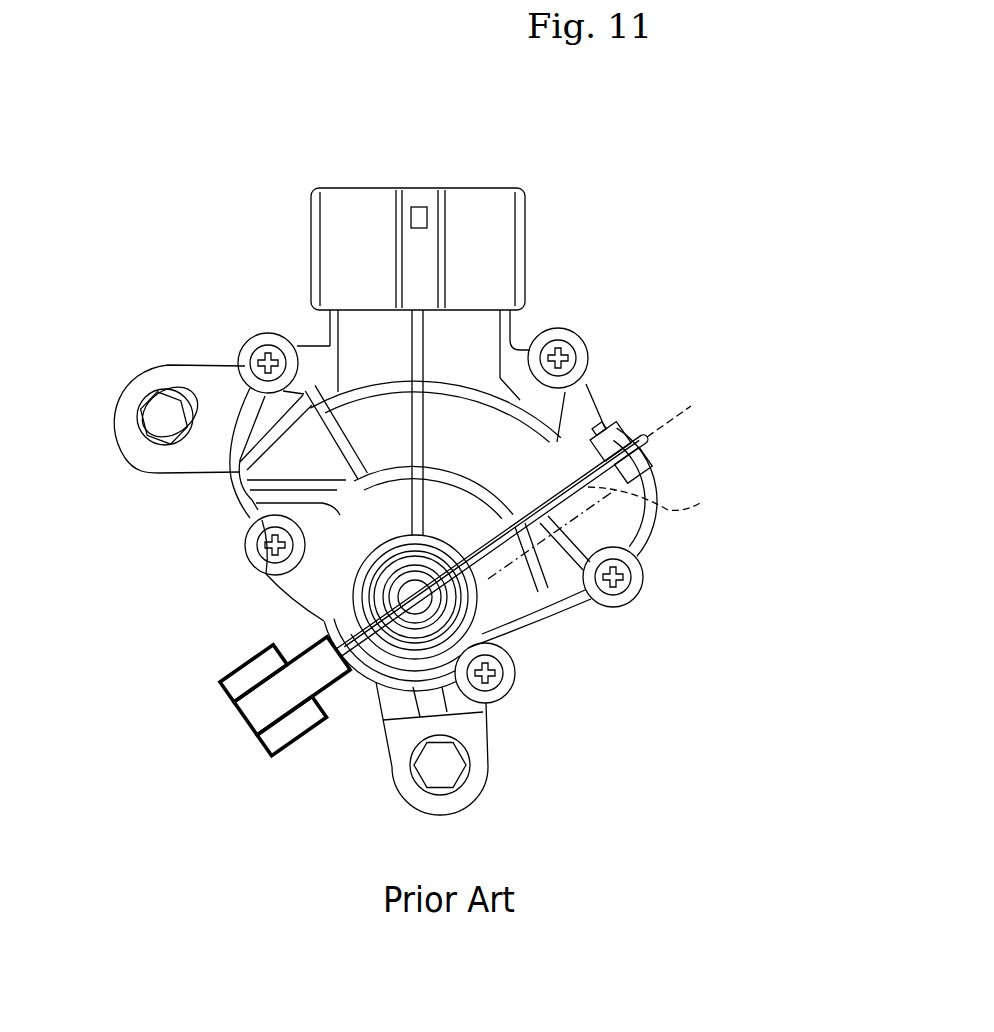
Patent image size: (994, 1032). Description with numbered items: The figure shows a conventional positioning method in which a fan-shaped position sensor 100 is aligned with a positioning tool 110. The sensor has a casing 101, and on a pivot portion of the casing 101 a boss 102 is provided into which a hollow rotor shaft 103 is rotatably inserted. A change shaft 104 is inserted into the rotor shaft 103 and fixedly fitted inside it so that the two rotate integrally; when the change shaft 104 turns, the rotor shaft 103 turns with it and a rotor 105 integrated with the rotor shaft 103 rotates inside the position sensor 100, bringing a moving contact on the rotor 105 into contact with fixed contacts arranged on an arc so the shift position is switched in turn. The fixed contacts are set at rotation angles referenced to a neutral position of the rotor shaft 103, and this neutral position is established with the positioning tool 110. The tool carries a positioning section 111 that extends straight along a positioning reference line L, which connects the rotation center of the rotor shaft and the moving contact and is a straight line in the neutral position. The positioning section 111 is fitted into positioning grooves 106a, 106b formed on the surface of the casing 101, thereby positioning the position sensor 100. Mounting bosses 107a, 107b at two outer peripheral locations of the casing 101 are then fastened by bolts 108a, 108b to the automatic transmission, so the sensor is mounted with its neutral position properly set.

The position sensor 100 is at (248, 275).
The casing 101 is at (245, 505).
The boss 102 is at (352, 596).
The rotor shaft 103 is at (375, 594).
The change shaft 104 is at (428, 607).
The rotor 105 is at (615, 533).
The positioning groove 106a is at (463, 548).
The positioning groove 106b is at (622, 440).
The mounting boss 107a is at (495, 740).
The mounting boss 107b is at (178, 392).
The bolt 108a is at (162, 432).
The bolt 108b is at (450, 757).
The positioning tool 110 is at (232, 727).
The positioning section 111 is at (628, 520).
The positioning reference line L is at (679, 411).